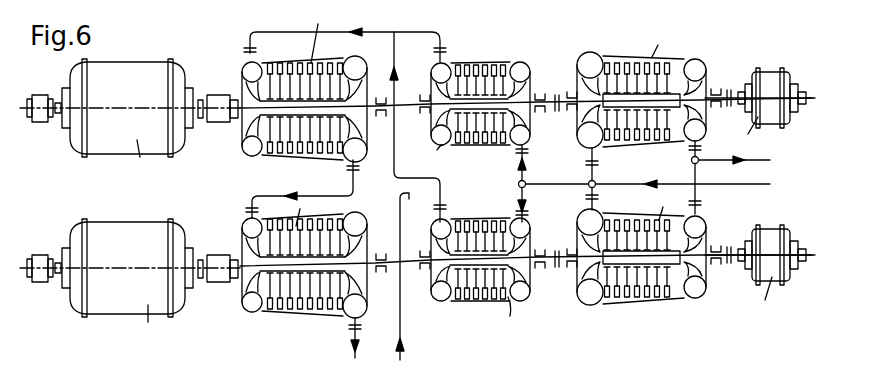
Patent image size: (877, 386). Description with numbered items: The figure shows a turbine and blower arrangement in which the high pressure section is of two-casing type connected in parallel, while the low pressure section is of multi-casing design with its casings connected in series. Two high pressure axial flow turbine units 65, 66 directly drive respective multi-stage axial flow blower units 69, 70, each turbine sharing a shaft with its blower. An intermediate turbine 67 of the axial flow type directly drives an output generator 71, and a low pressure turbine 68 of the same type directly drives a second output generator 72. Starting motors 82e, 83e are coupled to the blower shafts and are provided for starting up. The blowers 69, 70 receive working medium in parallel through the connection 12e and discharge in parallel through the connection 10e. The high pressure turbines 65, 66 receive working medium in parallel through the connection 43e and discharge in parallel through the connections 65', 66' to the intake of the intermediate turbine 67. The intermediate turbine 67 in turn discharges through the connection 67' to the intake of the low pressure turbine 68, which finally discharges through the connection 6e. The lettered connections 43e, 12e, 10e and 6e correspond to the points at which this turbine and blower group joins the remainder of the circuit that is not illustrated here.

The output generator 71 is at (116, 68).
The output generator 72 is at (117, 233).
The intermediate turbine 67 is at (275, 86).
The low pressure turbine 68 is at (308, 313).
The high pressure axial flow turbine unit 66 is at (483, 98).
The high pressure axial flow turbine unit 65 is at (510, 274).
The multi-stage axial flow blower unit 70 is at (622, 55).
The multi-stage axial flow blower unit 69 is at (665, 298).
The starting motor 82e is at (767, 73).
The starting motor 83e is at (772, 235).
The discharge connection 66' is at (348, 32).
The discharge connection 65' is at (404, 127).
The discharge connection 67' is at (302, 189).
The turbine intake connection 43e is at (415, 276).
The blower intake connection 12e is at (643, 181).
The blower discharge connection 10e is at (750, 161).
The turbine discharge connection 6e is at (366, 338).